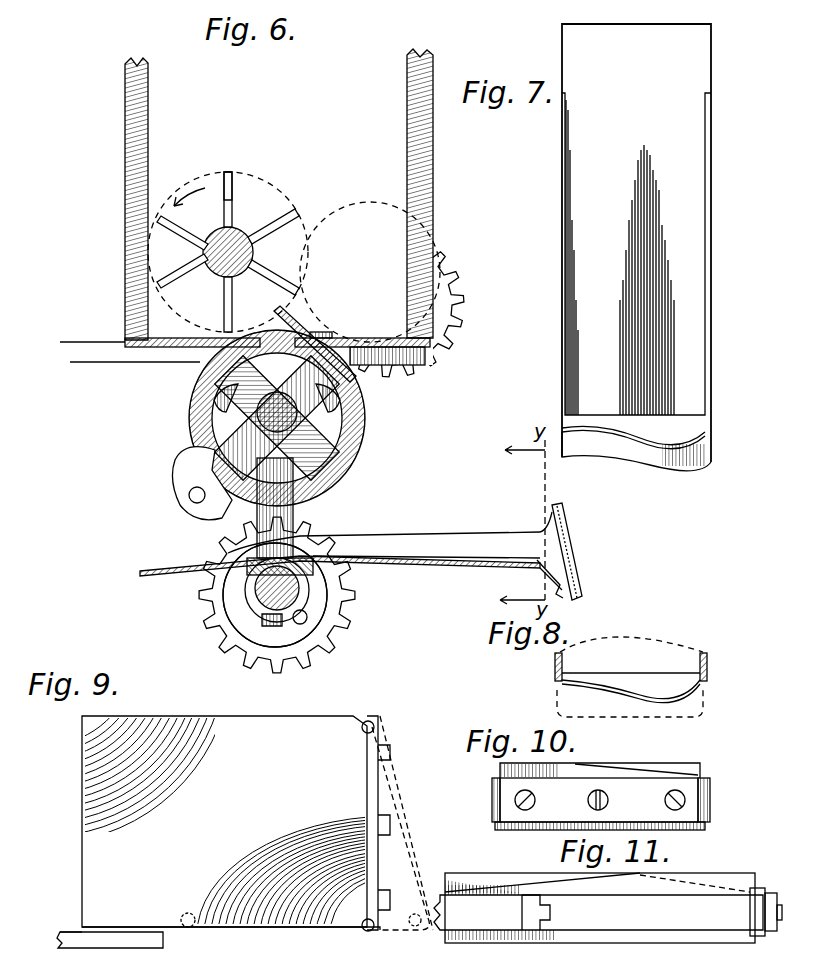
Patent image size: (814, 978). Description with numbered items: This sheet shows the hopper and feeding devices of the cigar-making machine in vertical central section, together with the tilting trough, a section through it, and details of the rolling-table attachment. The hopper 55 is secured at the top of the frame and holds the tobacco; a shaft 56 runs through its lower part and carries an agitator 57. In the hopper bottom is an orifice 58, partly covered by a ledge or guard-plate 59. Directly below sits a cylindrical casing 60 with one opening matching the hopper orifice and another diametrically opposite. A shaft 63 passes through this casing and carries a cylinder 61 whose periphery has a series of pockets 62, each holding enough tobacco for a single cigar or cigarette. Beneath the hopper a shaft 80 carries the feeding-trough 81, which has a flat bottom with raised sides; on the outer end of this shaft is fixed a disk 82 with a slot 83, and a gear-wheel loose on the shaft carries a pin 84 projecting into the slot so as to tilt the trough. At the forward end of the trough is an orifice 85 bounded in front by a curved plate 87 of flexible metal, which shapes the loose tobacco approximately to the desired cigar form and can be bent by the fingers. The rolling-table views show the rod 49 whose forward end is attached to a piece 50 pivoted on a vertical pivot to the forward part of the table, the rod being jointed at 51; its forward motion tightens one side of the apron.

In FIG. 9, the rod 49 is at (110, 940).
In FIG. 11, the rod 49 is at (495, 920).
In FIG. 9, the pivoted piece 50 is at (385, 800).
In FIG. 10, the pivoted piece 50 is at (640, 790).
In FIG. 11, the pivoted piece 50 is at (758, 890).
In FIG. 9, the joint 51 is at (188, 930).
In FIG. 11, the joint 51 is at (535, 925).
In FIG. 6, the hopper 55 is at (407, 118).
In FIG. 6, the shaft 56 is at (247, 235).
In FIG. 6, the agitator 57 is at (228, 172).
In FIG. 6, the orifice 58 is at (272, 328).
In FIG. 6, the ledge or guard-plate 59 is at (387, 305).
In FIG. 6, the casing 60 is at (360, 400).
In FIG. 6, the cylinder 61 is at (195, 438).
In FIG. 6, the pockets 62 is at (222, 408).
In FIG. 6, the shaft 63 is at (337, 432).
In FIG. 6, the shaft 80 is at (300, 596).
In FIG. 6, the feeding-trough 81 is at (398, 548).
In FIG. 7, the feeding-trough 81 is at (565, 228).
In FIG. 8, the feeding-trough 81 is at (688, 670).
In FIG. 6, the disk 82 is at (235, 595).
In FIG. 6, the slot 83 is at (262, 628).
In FIG. 6, the pin 84 is at (305, 626).
In FIG. 6, the orifice 85 is at (532, 570).
In FIG. 7, the orifice 85 is at (690, 428).
In FIG. 6, the plate 87 is at (562, 530).
In FIG. 7, the plate 87 is at (660, 470).